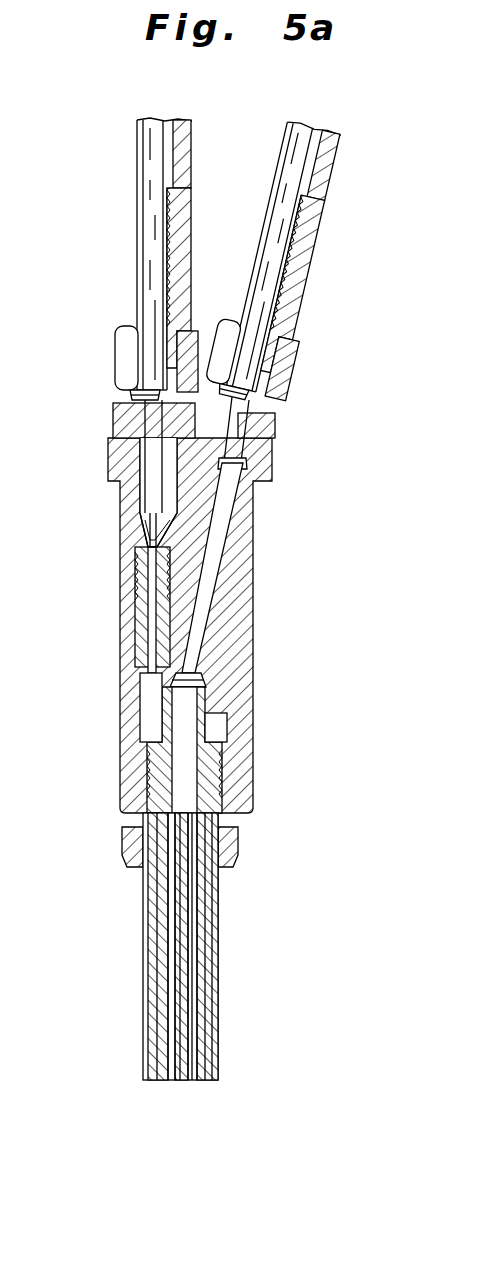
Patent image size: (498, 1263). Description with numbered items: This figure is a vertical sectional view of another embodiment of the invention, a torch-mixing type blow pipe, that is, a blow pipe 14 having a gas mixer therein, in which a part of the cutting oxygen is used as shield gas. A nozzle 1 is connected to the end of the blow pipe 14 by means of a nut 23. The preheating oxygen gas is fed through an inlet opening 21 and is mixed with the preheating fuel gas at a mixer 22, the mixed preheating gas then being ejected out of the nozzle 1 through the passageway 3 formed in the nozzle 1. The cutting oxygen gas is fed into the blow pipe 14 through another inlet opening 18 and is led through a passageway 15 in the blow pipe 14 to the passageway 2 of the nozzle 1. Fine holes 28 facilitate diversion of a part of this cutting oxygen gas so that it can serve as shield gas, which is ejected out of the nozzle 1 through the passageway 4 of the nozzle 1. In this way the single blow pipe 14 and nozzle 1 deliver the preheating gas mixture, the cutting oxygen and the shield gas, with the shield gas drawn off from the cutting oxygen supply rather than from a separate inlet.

The nozzle 1 is at (218, 930).
The passageway 2 is at (180, 910).
The passageway 3 is at (155, 968).
The passageway 4 is at (185, 978).
The blow pipe 14 is at (120, 628).
The passageway 15 is at (205, 582).
The inlet opening 18 is at (300, 200).
The inlet opening 21 is at (160, 193).
The mixer 22 is at (150, 546).
The nut 23 is at (240, 840).
The fine holes 28 is at (210, 692).